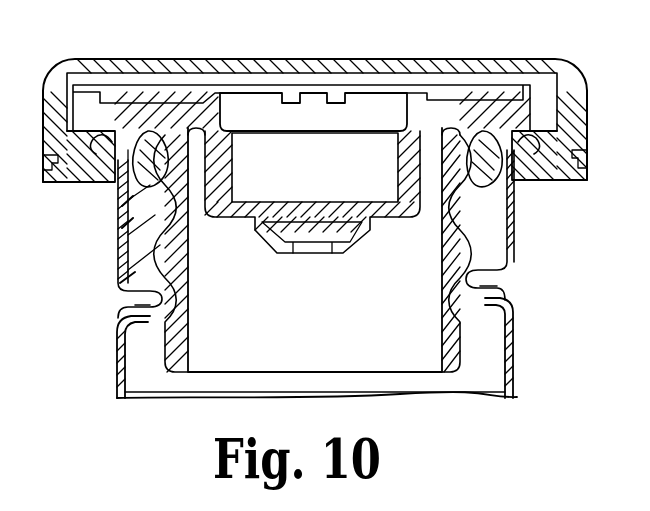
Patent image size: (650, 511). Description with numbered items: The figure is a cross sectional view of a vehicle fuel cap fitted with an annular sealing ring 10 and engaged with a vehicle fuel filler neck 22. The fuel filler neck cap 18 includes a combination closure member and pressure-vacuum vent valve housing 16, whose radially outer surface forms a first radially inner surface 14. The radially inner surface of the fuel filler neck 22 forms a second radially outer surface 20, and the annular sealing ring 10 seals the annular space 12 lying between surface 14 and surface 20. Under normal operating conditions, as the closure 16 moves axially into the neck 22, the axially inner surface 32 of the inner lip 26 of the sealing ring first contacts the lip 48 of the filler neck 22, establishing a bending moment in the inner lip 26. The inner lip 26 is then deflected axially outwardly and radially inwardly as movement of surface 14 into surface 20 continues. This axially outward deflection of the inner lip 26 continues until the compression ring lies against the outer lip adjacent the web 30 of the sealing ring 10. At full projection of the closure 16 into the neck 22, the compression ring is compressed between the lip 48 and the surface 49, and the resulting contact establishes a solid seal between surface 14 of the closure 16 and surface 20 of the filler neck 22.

The annular sealing ring 10 is at (120, 228).
The annular space 12 is at (123, 283).
The first radially inner surface 14 is at (157, 212).
The combination closure member and pressure-vacuum vent valve housing 16 is at (326, 326).
The fuel filler neck cap 18 is at (298, 58).
The second radially outer surface 20 is at (115, 378).
The fuel filler neck 22 is at (113, 333).
The inner lip 26 is at (118, 205).
The web 30 is at (176, 162).
The axially inner surface 32 is at (125, 262).
The lip 48 is at (100, 135).
The surface 49 is at (88, 185).